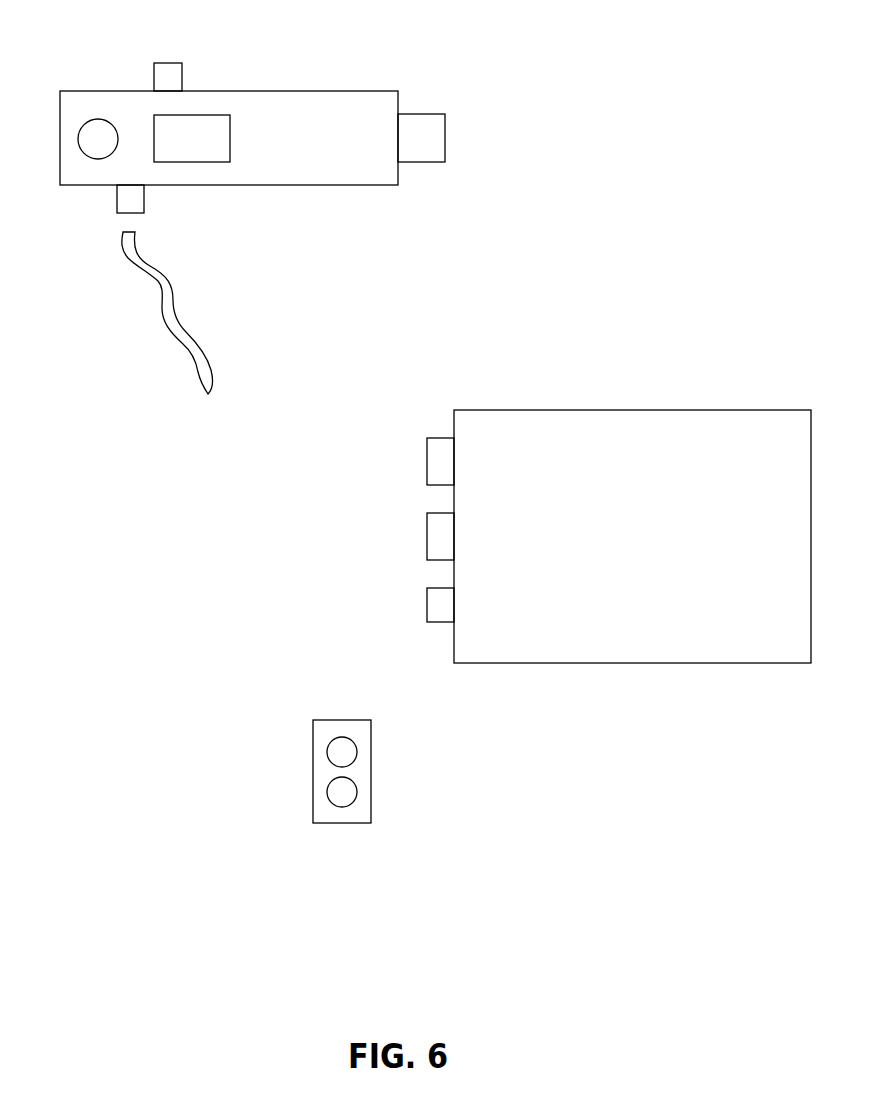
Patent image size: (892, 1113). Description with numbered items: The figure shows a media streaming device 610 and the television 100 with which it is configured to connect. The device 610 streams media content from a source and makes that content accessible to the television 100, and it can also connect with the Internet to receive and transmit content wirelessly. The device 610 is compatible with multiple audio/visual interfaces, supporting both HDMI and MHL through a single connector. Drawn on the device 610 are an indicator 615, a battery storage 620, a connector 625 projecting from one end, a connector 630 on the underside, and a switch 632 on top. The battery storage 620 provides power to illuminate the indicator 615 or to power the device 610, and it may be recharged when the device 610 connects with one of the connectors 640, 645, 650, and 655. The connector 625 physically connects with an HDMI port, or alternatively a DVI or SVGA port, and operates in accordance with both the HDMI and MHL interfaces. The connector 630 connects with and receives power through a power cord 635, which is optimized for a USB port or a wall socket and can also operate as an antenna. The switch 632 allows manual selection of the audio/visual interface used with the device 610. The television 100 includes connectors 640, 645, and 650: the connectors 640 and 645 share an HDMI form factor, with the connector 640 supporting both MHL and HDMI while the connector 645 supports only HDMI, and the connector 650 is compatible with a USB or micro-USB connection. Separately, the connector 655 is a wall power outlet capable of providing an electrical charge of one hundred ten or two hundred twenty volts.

The television 100 is at (650, 410).
The media streaming device 610 is at (244, 91).
The indicator 615 is at (80, 126).
The battery storage 620 is at (230, 136).
The connector 625 is at (445, 135).
The connector 630 is at (144, 199).
The switch 632 is at (167, 63).
The power cord 635 is at (173, 292).
The connector 640 is at (427, 460).
The connector 645 is at (427, 537).
The connector 650 is at (427, 605).
The connector 655 is at (371, 755).